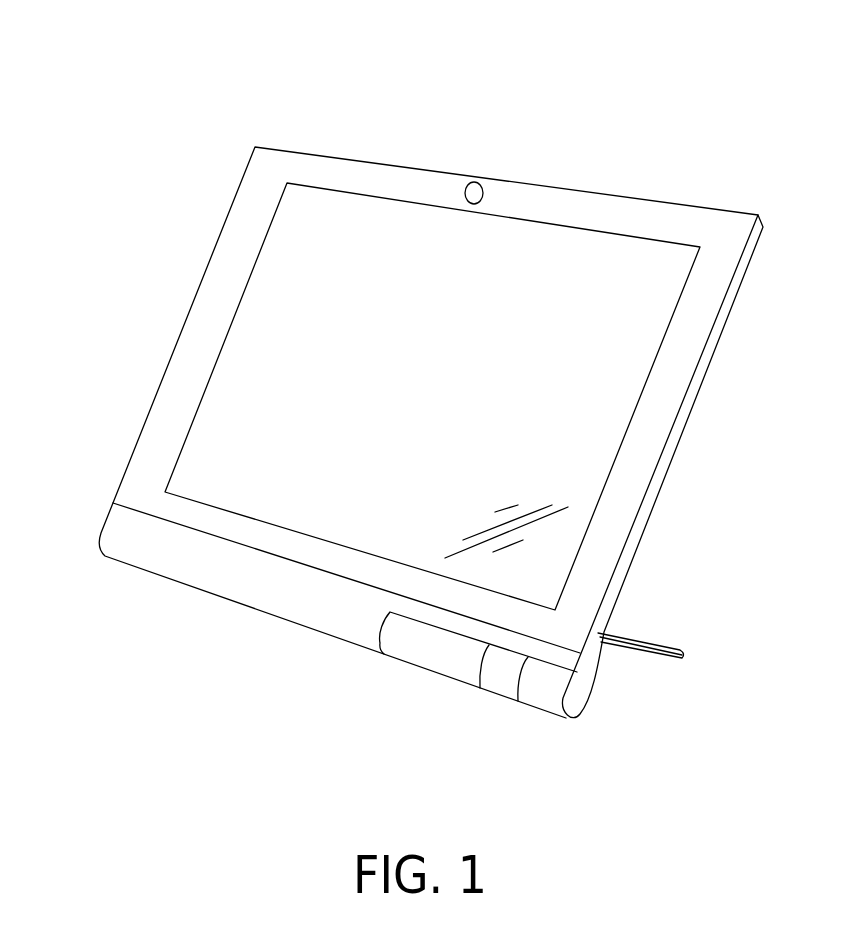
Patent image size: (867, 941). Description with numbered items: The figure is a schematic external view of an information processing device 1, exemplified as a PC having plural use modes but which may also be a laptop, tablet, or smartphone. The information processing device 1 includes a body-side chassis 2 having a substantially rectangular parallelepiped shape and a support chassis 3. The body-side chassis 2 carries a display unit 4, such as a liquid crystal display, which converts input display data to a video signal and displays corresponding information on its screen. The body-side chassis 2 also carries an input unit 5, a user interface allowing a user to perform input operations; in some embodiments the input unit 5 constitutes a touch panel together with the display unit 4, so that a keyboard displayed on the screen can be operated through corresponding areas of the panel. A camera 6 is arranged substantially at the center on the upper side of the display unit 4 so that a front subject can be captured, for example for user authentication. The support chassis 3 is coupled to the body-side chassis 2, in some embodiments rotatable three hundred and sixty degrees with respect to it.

The information processing device 1 is at (691, 69).
The body-side chassis 2 is at (733, 210).
The support chassis 3 is at (670, 644).
The display unit 4 is at (255, 332).
The input unit 5 is at (388, 396).
The camera 6 is at (473, 182).